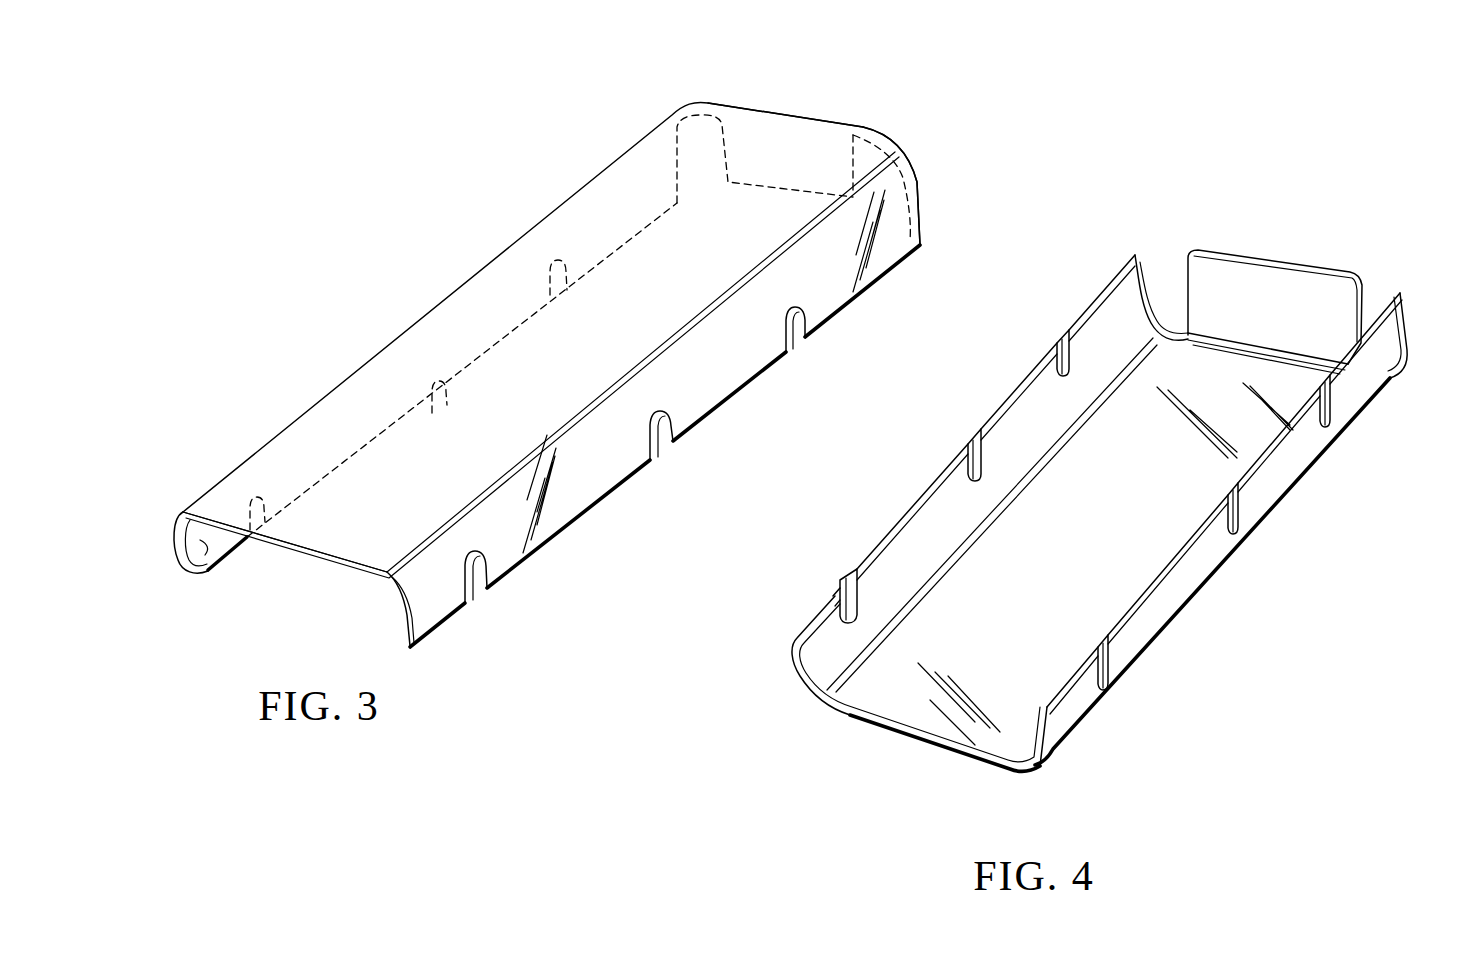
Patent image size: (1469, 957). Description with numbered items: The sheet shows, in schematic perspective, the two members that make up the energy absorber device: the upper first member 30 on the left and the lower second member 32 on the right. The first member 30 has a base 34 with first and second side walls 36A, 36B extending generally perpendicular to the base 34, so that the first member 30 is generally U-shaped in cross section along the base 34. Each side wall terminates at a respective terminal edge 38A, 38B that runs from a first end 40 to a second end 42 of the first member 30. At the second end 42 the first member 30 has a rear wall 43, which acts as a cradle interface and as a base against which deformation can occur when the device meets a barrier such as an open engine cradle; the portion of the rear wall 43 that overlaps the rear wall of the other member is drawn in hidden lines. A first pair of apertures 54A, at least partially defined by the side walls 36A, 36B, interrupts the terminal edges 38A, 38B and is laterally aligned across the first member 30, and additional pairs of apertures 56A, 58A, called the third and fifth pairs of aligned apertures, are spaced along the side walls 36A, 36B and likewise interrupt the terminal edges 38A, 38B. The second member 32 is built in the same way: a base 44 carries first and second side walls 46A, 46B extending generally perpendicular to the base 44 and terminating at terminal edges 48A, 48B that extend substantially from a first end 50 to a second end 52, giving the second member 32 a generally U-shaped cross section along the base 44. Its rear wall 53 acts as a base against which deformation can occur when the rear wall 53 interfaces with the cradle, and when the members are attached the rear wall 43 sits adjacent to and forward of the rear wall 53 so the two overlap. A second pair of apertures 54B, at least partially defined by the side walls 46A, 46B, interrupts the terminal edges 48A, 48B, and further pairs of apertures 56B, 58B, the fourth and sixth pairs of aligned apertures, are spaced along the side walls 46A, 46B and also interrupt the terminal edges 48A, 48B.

In FIG. 3, the first member 30 is at (380, 198).
In FIG. 4, the second member 32 is at (1218, 650).
In FIG. 3, the base 34 is at (525, 340).
In FIG. 3, the first side wall 36A is at (205, 568).
In FIG. 3, the second side wall 36B is at (832, 297).
In FIG. 3, the terminal edge 38A is at (358, 435).
In FIG. 3, the terminal edge 38B is at (560, 535).
In FIG. 3, the first end 40 is at (295, 555).
In FIG. 3, the second end 42 is at (790, 111).
In FIG. 3, the rear wall 43 is at (776, 188).
In FIG. 4, the base 44 is at (1030, 611).
In FIG. 4, the first side wall 46A is at (796, 664).
In FIG. 4, the second side wall 46B is at (1077, 712).
In FIG. 4, the terminal edge 48A is at (912, 518).
In FIG. 4, the terminal edge 48B is at (1170, 576).
In FIG. 4, the first end 50 is at (920, 746).
In FIG. 4, the second end 52 is at (1288, 262).
In FIG. 4, the rear wall 53 is at (1275, 297).
In FIG. 3, the first pair of apertures 54A is at (485, 588).
In FIG. 4, the second pair of apertures 54B is at (850, 602).
In FIG. 3, the third pair of aligned apertures 56A is at (672, 440).
In FIG. 4, the fourth pair of aligned apertures 56B is at (969, 442).
In FIG. 3, the fifth pair of aligned apertures 58A is at (800, 334).
In FIG. 4, the sixth pair of aligned apertures 58B is at (1062, 340).